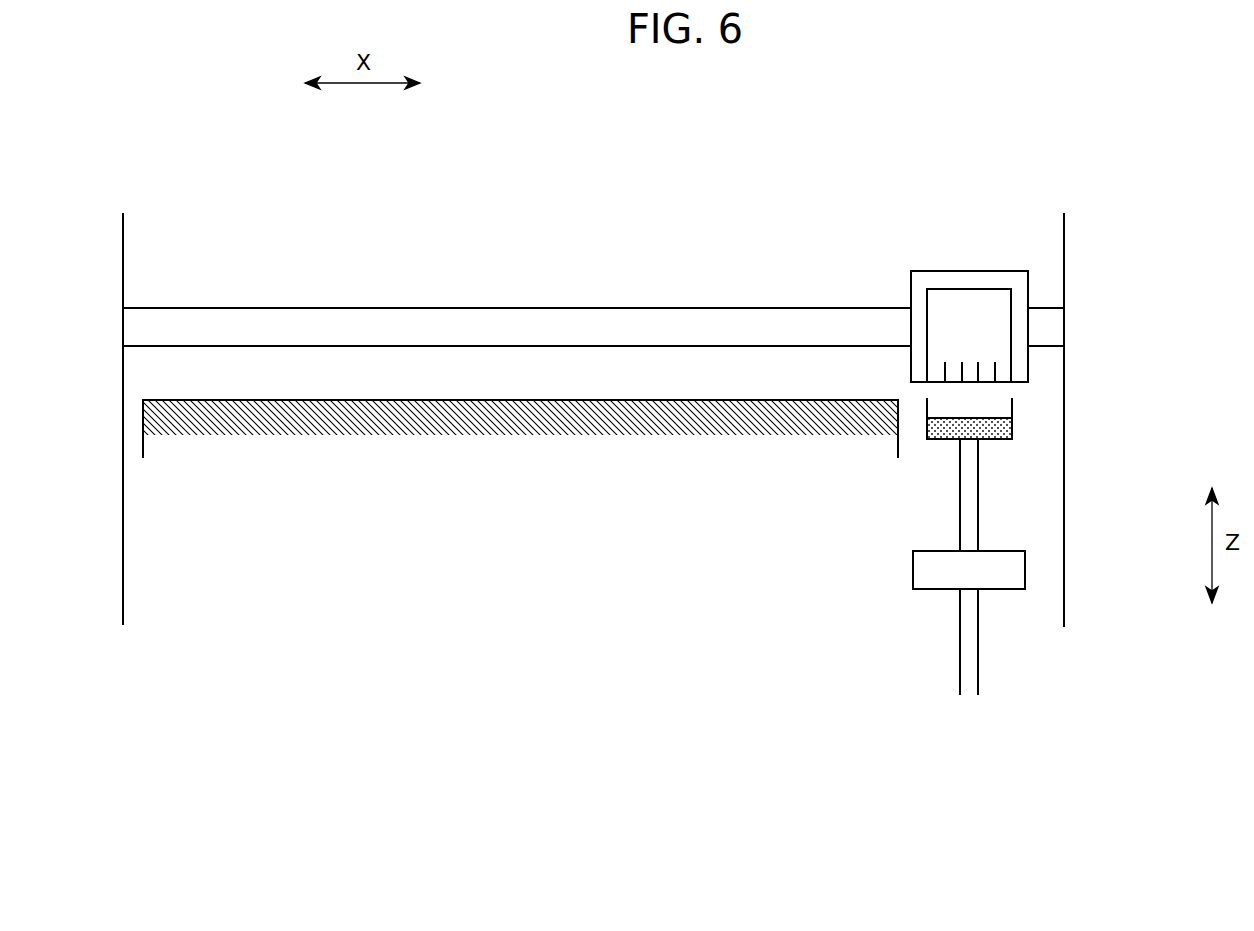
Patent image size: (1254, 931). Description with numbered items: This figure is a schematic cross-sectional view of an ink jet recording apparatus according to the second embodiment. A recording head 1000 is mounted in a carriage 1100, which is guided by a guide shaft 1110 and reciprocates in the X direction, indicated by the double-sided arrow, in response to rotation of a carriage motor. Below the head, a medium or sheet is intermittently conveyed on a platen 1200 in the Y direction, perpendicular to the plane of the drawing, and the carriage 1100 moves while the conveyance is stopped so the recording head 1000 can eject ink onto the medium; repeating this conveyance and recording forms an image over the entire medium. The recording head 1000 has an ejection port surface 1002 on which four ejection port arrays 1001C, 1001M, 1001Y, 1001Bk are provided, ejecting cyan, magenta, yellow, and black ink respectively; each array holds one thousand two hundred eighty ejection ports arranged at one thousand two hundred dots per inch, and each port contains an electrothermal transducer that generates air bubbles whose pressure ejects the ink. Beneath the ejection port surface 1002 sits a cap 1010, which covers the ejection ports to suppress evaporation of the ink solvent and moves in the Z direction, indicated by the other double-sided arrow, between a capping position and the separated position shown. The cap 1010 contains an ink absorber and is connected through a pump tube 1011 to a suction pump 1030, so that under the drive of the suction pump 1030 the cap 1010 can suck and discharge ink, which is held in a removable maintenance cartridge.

The guide shaft 1110 is at (213, 308).
The platen 1200 is at (400, 400).
The carriage 1100 is at (1028, 296).
The recording head 1000 is at (937, 372).
The ejection port surface 1002 is at (1004, 383).
The ejection port array 1001C is at (945, 362).
The ejection port array 1001M is at (962, 362).
The ejection port array 1001Y is at (978, 362).
The ejection port array 1001Bk is at (995, 362).
The cap 1010 is at (942, 440).
The pump tube 1011 is at (965, 652).
The suction pump 1030 is at (1025, 568).